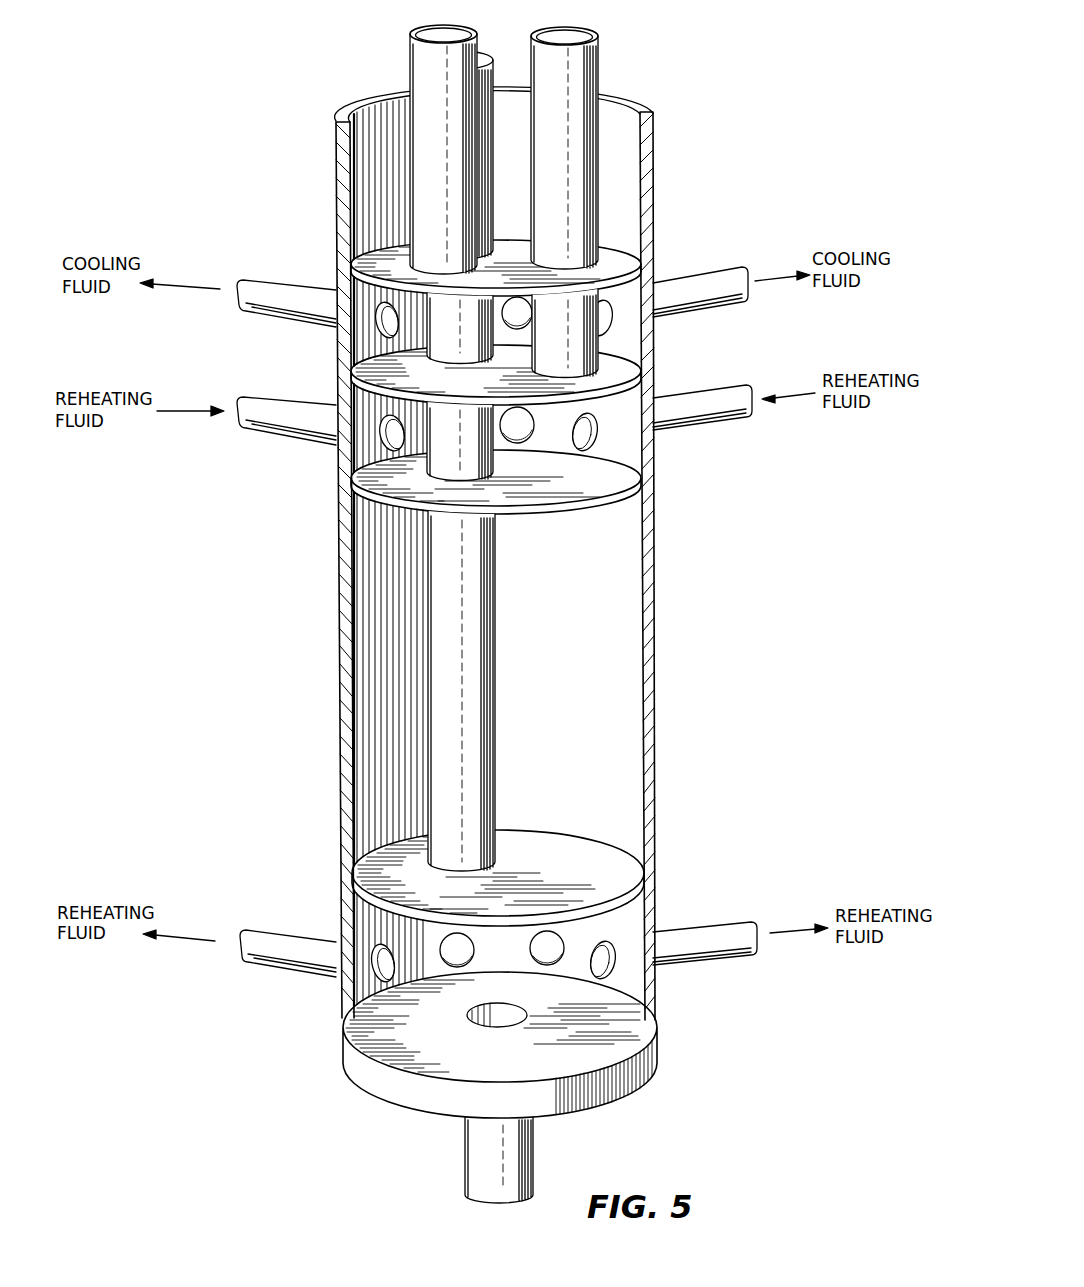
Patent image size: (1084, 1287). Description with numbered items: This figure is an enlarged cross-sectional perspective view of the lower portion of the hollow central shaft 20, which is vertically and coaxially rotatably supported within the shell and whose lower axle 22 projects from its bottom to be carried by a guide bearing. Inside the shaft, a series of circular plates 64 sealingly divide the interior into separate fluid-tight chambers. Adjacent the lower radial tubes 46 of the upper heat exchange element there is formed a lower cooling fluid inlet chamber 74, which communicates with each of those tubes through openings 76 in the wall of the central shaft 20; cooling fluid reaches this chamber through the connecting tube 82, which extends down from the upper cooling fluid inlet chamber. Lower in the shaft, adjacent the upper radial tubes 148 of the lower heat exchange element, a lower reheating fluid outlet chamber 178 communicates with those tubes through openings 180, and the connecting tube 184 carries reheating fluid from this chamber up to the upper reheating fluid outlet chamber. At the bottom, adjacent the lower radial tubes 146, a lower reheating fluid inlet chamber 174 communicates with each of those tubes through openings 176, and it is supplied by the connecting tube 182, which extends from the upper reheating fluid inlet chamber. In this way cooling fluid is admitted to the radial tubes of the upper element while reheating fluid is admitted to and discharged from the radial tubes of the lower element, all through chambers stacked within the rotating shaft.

The central shaft 20 is at (338, 165).
The lower axle 22 is at (473, 1148).
The lower radial tubes 46 is at (316, 288).
The circular plates 64 is at (512, 237).
The lower cooling fluid inlet chamber 74 is at (500, 298).
The openings 76 is at (399, 330).
The connecting tube 82 is at (414, 58).
The lower radial tubes 146 is at (313, 945).
The upper radial tubes 148 is at (306, 440).
The lower reheating fluid inlet chamber 174 is at (512, 965).
The openings 176 is at (447, 953).
The lower reheating fluid outlet chamber 178 is at (566, 441).
The openings 180 is at (393, 450).
The connecting tube 182 is at (448, 648).
The connecting tube 184 is at (568, 70).